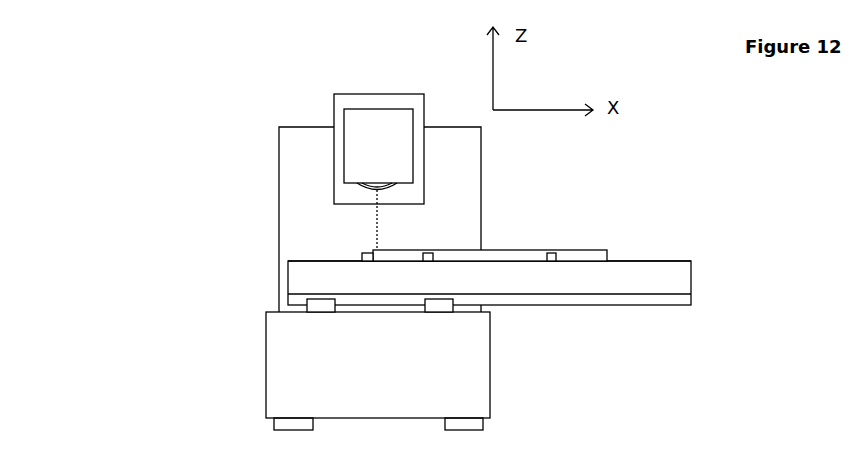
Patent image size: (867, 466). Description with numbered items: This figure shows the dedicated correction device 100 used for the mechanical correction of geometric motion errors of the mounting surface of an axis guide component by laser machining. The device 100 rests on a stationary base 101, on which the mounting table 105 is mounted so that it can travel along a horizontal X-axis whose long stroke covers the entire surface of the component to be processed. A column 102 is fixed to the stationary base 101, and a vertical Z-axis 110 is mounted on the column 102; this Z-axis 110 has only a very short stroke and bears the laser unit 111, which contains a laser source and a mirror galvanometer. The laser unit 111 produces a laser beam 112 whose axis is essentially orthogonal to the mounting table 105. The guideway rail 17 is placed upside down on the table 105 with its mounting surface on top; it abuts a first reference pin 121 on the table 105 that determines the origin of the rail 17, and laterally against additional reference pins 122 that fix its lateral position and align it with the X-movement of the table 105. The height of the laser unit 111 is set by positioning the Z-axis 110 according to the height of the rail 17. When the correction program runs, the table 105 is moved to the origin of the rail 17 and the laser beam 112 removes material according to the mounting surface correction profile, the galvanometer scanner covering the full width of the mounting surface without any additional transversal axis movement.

The dedicated correction device 100 is at (287, 80).
The stationary base 101 is at (299, 367).
The column 102 is at (299, 208).
The mounting table 105 is at (319, 278).
The vertical Z-axis 110 is at (338, 161).
The laser unit 111 is at (369, 139).
The laser beam 112 is at (377, 226).
The guideway rail 17 is at (522, 255).
The first reference pin 121 is at (342, 262).
The additional reference pins 122 is at (433, 255).